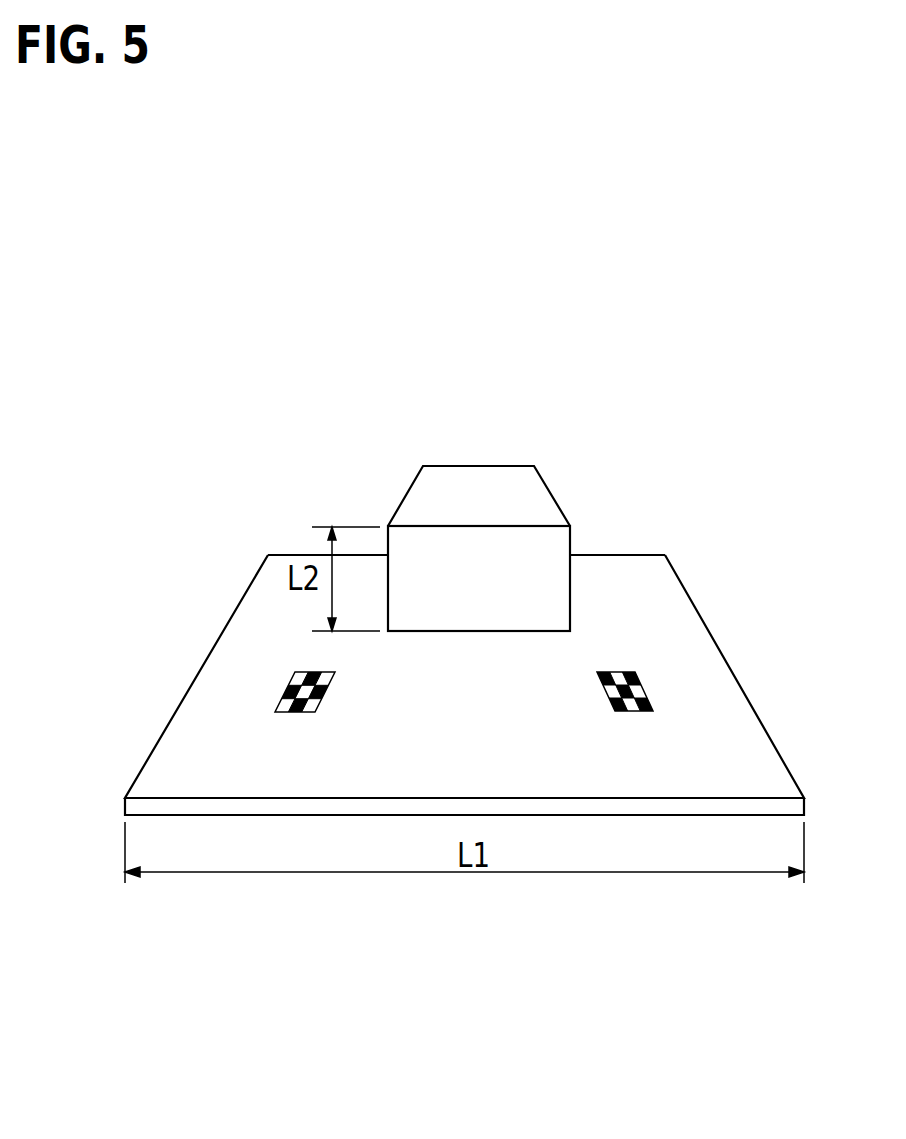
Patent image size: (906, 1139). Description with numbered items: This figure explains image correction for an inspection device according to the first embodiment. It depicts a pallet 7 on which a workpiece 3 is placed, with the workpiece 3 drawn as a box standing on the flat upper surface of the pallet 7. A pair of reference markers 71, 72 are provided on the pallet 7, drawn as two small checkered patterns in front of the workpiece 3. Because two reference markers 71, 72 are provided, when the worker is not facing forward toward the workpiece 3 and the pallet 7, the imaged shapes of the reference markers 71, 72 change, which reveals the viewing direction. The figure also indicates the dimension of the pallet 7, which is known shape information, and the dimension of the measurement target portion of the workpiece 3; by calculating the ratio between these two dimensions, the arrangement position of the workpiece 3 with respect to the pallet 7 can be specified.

The workpiece 3 is at (470, 483).
The pallet 7 is at (630, 553).
The reference marker 71 is at (297, 713).
The reference marker 72 is at (636, 713).